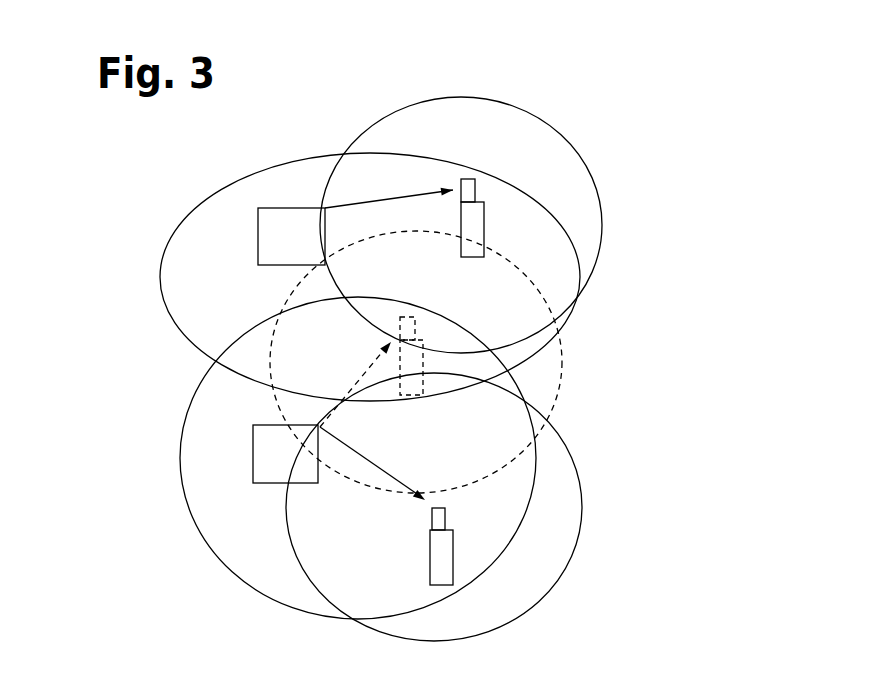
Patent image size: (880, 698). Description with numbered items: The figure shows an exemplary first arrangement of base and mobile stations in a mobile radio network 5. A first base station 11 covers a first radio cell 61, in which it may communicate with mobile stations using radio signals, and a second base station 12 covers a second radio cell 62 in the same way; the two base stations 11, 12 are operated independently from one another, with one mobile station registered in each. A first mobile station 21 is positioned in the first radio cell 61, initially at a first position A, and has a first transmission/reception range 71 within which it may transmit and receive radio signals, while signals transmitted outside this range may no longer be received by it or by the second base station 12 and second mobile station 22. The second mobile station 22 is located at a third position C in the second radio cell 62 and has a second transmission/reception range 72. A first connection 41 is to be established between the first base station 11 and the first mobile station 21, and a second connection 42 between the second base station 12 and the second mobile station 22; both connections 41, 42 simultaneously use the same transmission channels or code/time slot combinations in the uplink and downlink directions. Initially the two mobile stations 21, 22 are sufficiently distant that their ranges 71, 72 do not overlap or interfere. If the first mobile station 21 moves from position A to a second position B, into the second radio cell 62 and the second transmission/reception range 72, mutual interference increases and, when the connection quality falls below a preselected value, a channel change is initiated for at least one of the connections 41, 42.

The mobile radio network 5 is at (645, 172).
The first base station 11 is at (265, 468).
The second base station 12 is at (262, 232).
The first mobile station 21 is at (423, 363).
The second mobile station 22 is at (472, 218).
The first connection 41 is at (367, 370).
The second connection 42 is at (374, 200).
The first radio cell 61 is at (215, 415).
The second radio cell 62 is at (253, 193).
The first transmission/reception range 71 is at (552, 396).
The second transmission/reception range 72 is at (545, 142).